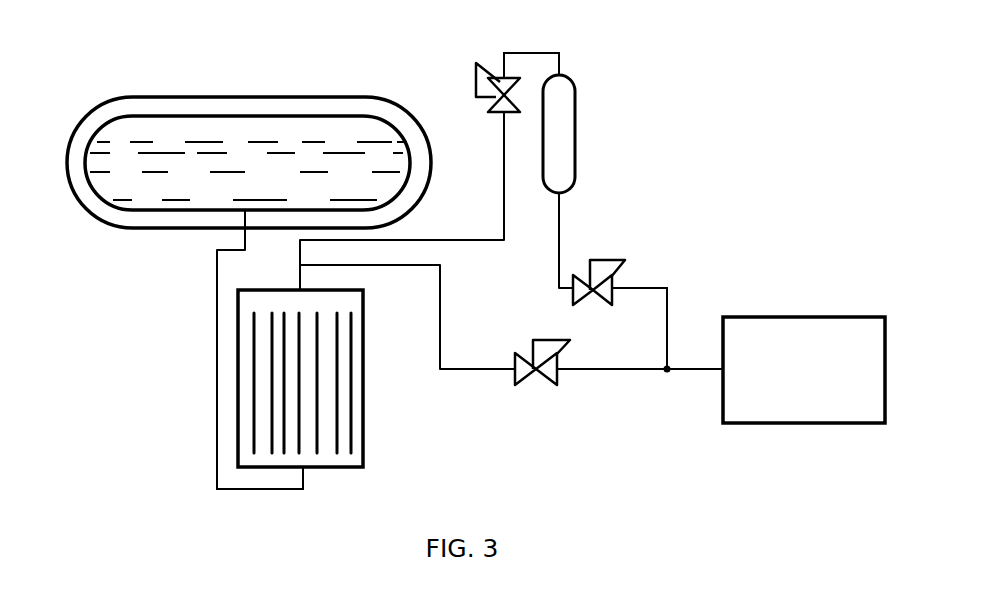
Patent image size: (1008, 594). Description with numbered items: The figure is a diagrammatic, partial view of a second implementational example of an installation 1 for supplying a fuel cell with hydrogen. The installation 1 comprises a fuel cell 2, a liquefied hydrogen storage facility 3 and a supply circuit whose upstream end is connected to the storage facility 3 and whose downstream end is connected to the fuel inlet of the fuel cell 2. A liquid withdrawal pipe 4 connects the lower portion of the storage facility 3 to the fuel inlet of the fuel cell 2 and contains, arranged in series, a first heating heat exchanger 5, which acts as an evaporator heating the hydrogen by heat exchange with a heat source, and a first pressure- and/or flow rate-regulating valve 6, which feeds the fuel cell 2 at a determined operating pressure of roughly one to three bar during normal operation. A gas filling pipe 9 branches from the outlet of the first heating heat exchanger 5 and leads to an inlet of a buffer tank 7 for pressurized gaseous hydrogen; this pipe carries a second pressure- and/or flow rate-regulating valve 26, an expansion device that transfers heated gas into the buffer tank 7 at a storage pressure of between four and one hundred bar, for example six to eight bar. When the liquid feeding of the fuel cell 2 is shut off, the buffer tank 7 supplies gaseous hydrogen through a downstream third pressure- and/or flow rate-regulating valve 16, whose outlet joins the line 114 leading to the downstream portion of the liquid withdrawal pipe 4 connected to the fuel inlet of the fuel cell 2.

The installation 1 is at (98, 328).
The fuel cell 2 is at (797, 360).
The liquefied hydrogen storage facility 3 is at (220, 133).
The liquid withdrawal pipe 4 is at (257, 492).
The first heating heat exchanger 5 is at (280, 385).
The first pressure- and/or flow rate-regulating valve 6 is at (540, 396).
The buffer tank 7 is at (559, 152).
The gas filling pipe 9 is at (541, 43).
The third pressure- and/or flow rate-regulating valve 16 is at (618, 246).
The second pressure- and/or flow rate-regulating valve 26 is at (455, 97).
The line 114 is at (662, 276).